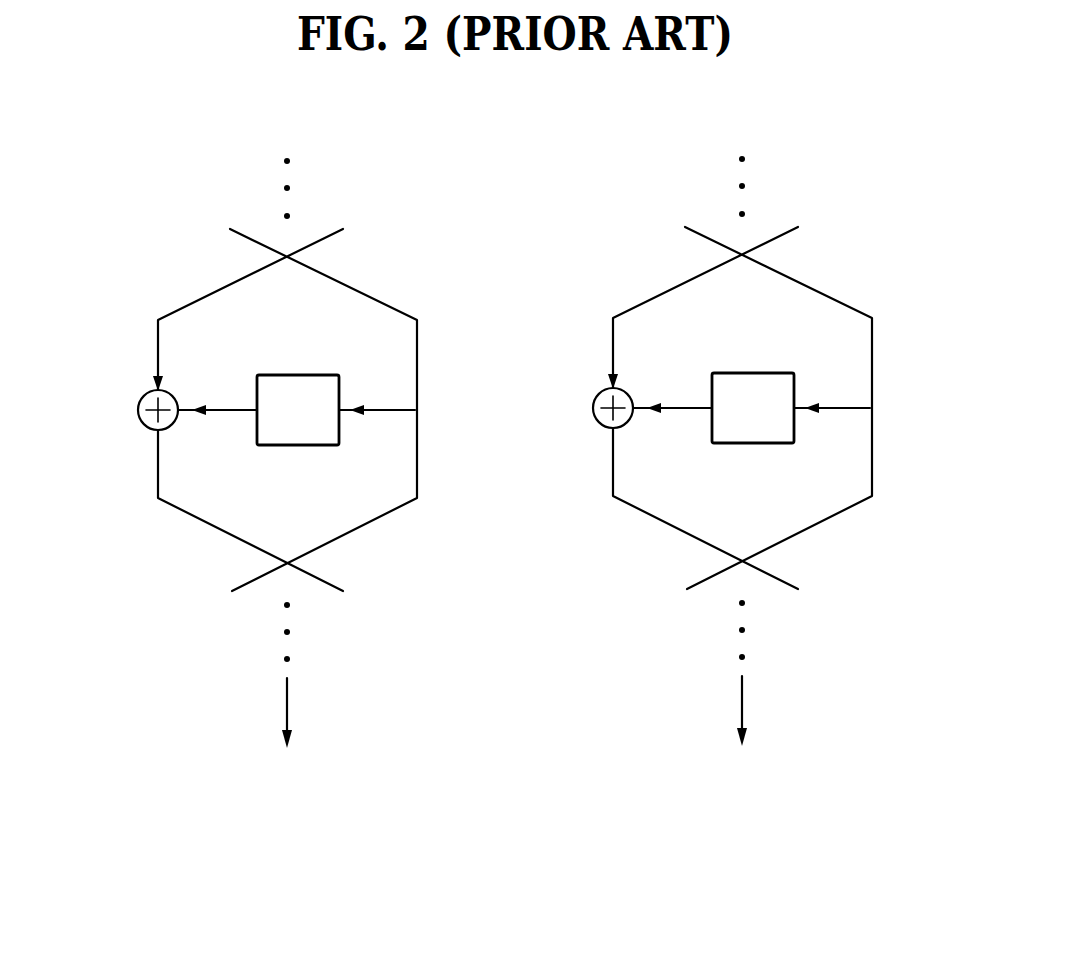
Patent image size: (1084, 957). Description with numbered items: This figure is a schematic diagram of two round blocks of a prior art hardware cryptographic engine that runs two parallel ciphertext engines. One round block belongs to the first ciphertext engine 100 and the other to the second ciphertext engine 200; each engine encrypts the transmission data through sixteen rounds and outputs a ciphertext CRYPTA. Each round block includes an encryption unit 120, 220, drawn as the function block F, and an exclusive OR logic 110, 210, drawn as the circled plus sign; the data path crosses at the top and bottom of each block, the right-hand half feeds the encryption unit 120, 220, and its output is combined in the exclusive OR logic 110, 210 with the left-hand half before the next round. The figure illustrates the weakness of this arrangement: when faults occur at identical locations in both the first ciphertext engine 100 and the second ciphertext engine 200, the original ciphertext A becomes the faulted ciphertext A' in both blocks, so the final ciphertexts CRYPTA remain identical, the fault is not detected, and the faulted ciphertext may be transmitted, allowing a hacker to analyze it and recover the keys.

The first ciphertext engine 100 is at (249, 476).
The exclusive OR logic 110 is at (138, 410).
The encryption unit 120 is at (300, 375).
The second ciphertext engine 200 is at (724, 474).
The exclusive OR logic 210 is at (565, 408).
The encryption unit 220 is at (753, 375).